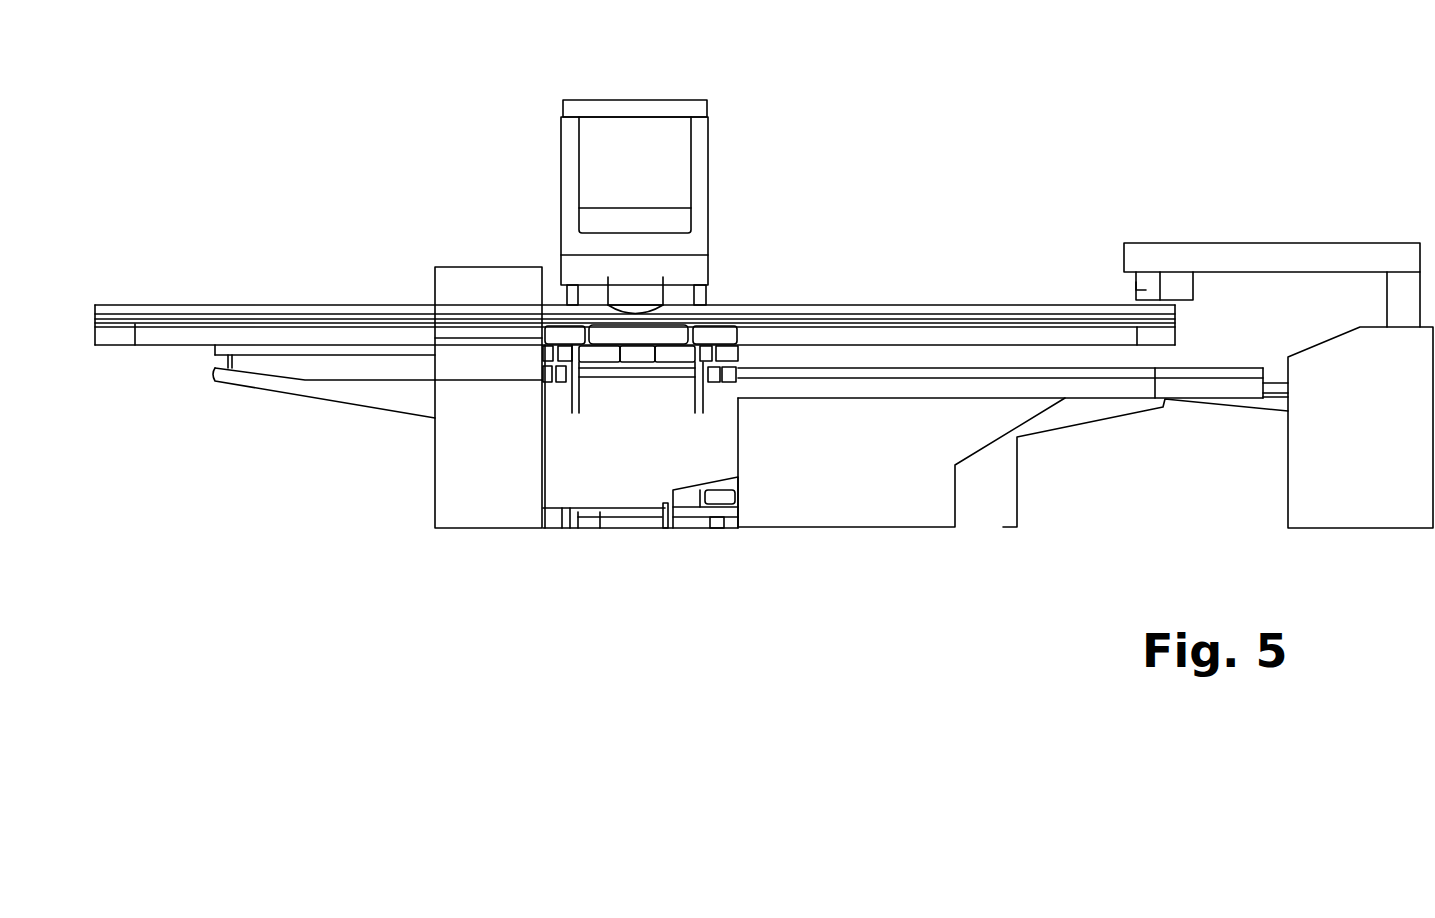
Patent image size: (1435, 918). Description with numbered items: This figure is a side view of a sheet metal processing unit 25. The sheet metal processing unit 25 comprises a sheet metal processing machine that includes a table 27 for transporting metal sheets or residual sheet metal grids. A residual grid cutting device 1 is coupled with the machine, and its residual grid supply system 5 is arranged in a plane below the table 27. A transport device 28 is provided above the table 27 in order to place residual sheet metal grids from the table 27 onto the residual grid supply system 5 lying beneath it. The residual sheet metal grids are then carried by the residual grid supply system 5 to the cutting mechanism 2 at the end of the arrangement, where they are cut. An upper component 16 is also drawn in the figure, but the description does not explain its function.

The residual grid cutting device 1 is at (1116, 548).
The cutting mechanism 2 is at (1377, 507).
The residual grid supply system 5 is at (968, 387).
The upper unit / dispensing head 16 is at (664, 74).
The sheet metal processing unit 25 is at (848, 628).
The table 27 is at (790, 305).
The transport device 28 is at (1205, 243).